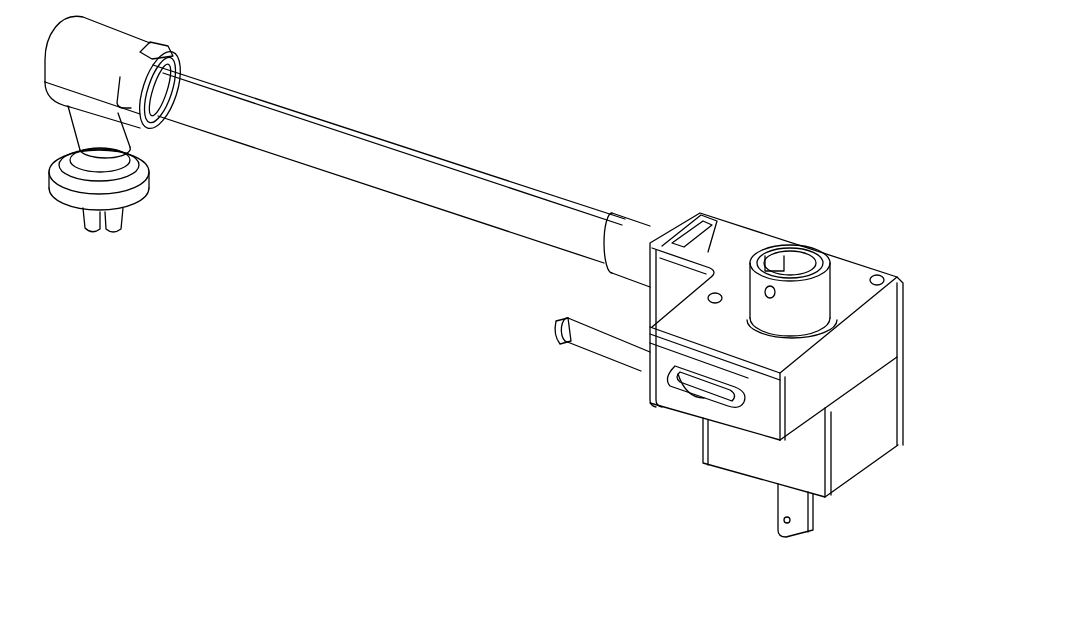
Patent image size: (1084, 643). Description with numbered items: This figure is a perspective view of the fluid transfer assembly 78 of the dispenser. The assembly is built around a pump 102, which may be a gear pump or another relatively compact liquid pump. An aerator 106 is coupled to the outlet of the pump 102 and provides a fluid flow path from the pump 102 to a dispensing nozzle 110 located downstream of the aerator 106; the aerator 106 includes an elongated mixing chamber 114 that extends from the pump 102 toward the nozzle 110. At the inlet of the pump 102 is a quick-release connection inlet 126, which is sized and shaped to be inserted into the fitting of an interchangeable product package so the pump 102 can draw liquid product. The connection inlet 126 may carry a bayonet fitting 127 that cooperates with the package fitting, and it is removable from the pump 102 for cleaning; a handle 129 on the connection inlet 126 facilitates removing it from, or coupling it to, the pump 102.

The fluid transfer assembly 78 is at (740, 124).
The aerator 106 is at (494, 154).
The mixing chamber 114 is at (397, 140).
The dispensing nozzle 110 is at (78, 225).
The pump 102 is at (860, 418).
The connection inlet 126 is at (620, 350).
The bayonet fitting 127 is at (563, 346).
The handle 129 is at (680, 397).